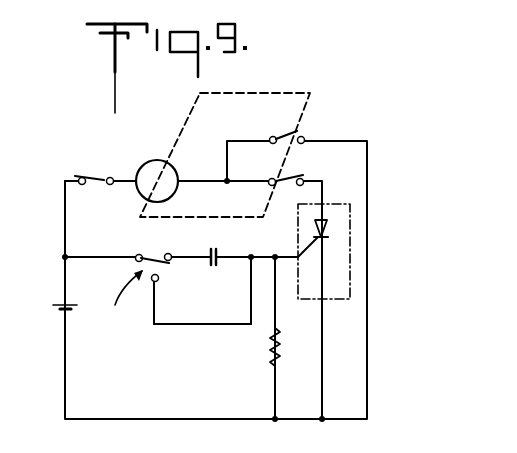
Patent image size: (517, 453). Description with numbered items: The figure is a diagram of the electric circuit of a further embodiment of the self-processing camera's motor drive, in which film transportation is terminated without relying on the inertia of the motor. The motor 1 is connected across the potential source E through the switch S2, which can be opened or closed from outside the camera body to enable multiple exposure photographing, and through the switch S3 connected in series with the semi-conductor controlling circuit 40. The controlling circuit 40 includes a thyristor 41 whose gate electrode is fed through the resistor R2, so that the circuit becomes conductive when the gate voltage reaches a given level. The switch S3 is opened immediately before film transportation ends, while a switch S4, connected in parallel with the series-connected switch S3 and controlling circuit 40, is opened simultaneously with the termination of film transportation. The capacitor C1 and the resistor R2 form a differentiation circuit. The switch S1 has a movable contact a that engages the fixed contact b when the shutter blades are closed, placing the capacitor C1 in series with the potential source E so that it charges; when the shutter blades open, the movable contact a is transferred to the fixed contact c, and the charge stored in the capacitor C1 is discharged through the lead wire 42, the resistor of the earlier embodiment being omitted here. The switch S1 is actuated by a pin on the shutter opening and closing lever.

The motor 1 is at (157, 160).
The semi-conductor controlling circuit 40 is at (342, 203).
The thyristor (SCR) 41 is at (315, 224).
The lead wire 42 is at (175, 327).
The switch S1 is at (138, 297).
The switch S2 is at (99, 172).
The switch S3 is at (294, 175).
The switch S4 is at (286, 134).
The potential source E is at (52, 306).
The capacitor C1 is at (209, 279).
The resistor R2 is at (270, 345).
The movable contact a is at (162, 252).
The fixed contact b is at (140, 253).
The fixed contact c is at (161, 277).